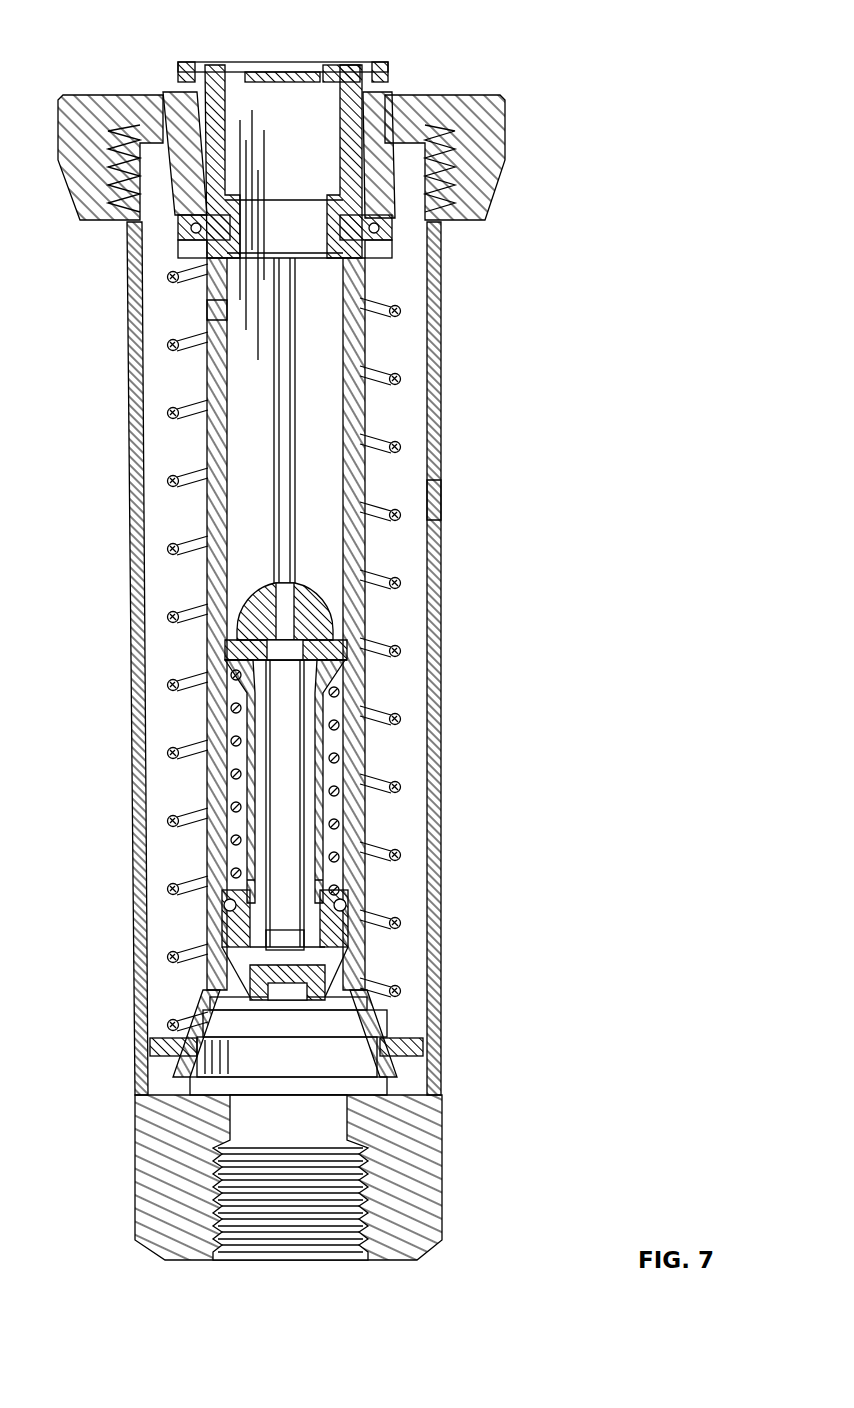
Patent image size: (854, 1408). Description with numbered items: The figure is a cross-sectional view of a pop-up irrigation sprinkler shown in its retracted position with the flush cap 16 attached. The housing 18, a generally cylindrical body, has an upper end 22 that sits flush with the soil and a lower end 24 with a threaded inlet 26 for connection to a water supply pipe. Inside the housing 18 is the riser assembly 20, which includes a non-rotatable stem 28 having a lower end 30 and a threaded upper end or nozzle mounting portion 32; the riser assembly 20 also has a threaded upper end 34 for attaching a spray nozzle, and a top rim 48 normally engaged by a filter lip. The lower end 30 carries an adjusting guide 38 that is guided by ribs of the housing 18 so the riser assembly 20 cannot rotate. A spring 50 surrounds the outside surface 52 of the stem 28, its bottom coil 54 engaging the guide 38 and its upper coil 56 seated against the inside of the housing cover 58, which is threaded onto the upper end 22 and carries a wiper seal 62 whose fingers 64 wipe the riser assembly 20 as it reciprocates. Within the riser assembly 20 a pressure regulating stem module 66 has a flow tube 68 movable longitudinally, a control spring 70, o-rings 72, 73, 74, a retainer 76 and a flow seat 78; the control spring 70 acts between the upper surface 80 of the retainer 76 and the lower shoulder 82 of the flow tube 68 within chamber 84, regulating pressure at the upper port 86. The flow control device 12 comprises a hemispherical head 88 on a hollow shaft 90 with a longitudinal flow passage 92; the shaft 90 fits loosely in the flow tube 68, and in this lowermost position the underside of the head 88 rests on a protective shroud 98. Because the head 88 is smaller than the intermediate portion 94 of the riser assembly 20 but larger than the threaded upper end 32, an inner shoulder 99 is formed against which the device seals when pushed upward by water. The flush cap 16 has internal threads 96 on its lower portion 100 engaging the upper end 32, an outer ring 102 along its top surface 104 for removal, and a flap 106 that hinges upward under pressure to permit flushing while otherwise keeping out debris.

The flow control device 12 is at (330, 600).
The flush cap 16 is at (355, 110).
The housing 18 is at (440, 800).
The riser assembly 20 is at (220, 850).
The upper end 22 is at (435, 170).
The lower end 24 is at (430, 1160).
The inlet 26 is at (210, 1180).
The stem 28 is at (210, 310).
The lower end 30 is at (185, 1075).
The nozzle mounting portion 32 is at (215, 285).
The threaded upper end 34 is at (400, 200).
The adjusting guide 38 is at (420, 1047).
The top rim 48 is at (200, 225).
The spring 50 is at (440, 500).
The outside surface 52 is at (175, 350).
The bottom coil 54 is at (400, 1040).
The upper coil 56 is at (175, 135).
The housing cover 58 is at (485, 110).
The wiper seal 62 is at (185, 105).
The fingers 64 is at (400, 230).
The pressure regulating stem module 66 is at (248, 750).
The flow tube 68 is at (240, 730).
The control spring 70 is at (330, 780).
The o-ring 72 is at (225, 690).
The o-ring 73 is at (335, 905).
The o-ring 74 is at (240, 905).
The retainer 76 is at (240, 880).
The flow seat 78 is at (330, 970).
The upper surface 80 is at (325, 870).
The lower shoulder 82 is at (330, 660).
The chamber 84 is at (330, 715).
The upper port 86 is at (230, 725).
The hemispherical head 88 is at (260, 600).
The hollow shaft 90 is at (250, 800).
The flow passage 92 is at (240, 850).
The intermediate portion 94 is at (355, 365).
The internal threads 96 is at (195, 235).
The protective shroud 98 is at (330, 640).
The inner shoulder 99 is at (340, 255).
The lower portion 100 is at (430, 175).
The outer ring 102 is at (380, 72).
The top surface 104 is at (348, 65).
The flap 106 is at (262, 72).